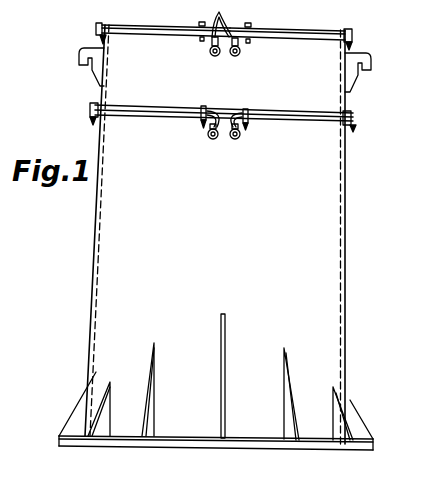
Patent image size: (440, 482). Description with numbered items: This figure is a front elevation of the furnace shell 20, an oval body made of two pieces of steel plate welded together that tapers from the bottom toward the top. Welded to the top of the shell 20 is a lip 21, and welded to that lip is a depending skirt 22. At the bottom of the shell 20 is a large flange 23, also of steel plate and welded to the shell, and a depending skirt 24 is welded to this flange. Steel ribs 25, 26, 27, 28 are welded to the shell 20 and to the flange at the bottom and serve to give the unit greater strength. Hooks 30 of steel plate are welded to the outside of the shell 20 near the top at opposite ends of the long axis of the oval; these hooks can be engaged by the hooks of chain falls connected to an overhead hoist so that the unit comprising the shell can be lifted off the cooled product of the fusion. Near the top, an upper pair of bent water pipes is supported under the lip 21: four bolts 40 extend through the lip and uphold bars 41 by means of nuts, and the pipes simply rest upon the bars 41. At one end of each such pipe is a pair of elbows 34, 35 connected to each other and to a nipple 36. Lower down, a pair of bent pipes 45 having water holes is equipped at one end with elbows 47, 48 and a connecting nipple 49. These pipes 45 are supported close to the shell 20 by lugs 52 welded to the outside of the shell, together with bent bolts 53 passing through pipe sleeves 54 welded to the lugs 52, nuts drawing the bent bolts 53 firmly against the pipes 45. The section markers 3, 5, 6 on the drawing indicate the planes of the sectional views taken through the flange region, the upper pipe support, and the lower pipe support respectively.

The furnace shell 20 is at (332, 242).
The lip 21 is at (158, 26).
The depending skirt 22 is at (300, 32).
The flange 23 is at (182, 436).
The depending skirt 24 is at (135, 446).
The steel rib 25 is at (224, 365).
The steel rib 26 is at (156, 388).
The steel rib 27 is at (108, 411).
The steel rib 28 is at (83, 410).
The hook 30 is at (79, 61).
The elbow 34 is at (219, 20).
The elbow 35 is at (217, 56).
The nipple 36 is at (210, 51).
The bolt 40 is at (99, 23).
The bar 41 is at (99, 38).
The bent pipe 45 is at (172, 112).
The elbow 47 is at (221, 107).
The elbow 48 is at (224, 136).
The connecting nipple 49 is at (209, 138).
The lug 52 is at (103, 113).
The bent bolt 53 is at (97, 105).
The pipe sleeve 54 is at (89, 116).
The section line 3- 3 is at (22, 445).
The section line 5- 5 is at (259, 5).
The section line 6- 6 is at (260, 88).